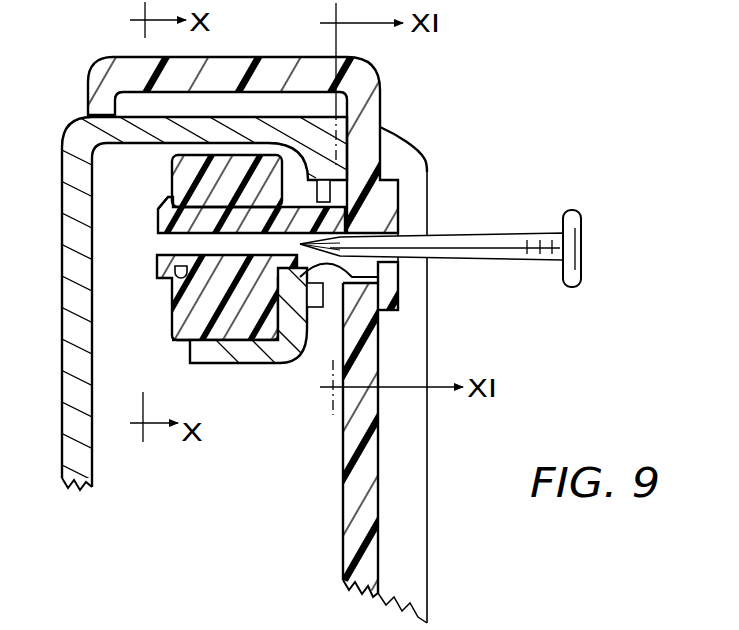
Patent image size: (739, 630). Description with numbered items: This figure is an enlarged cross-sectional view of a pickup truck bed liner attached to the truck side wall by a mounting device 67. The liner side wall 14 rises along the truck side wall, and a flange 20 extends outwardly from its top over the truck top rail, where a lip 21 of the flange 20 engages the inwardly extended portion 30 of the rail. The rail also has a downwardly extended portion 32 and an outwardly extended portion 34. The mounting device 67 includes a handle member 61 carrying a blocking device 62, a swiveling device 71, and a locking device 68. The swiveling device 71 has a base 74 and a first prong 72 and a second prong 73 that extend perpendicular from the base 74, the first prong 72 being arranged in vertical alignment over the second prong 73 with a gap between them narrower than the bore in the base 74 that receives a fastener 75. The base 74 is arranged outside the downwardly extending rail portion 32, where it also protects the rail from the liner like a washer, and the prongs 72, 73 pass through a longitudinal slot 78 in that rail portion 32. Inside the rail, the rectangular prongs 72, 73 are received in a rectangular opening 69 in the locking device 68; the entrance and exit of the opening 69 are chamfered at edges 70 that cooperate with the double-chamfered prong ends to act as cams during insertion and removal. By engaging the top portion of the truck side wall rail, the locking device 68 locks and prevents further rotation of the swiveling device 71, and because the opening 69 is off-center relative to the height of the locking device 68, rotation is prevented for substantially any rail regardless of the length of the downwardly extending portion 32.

The side wall 14 is at (365, 517).
The flange 20 is at (282, 65).
The lip 21 is at (98, 97).
The inwardly extended portion 30 is at (207, 120).
The downwardly extended portion 32 is at (295, 150).
The outwardly extended portion 34 is at (203, 362).
The handle member 61 is at (412, 190).
The blocking device 62 is at (402, 213).
The mounting device 67 is at (428, 150).
The locking device 68 is at (172, 345).
The rectangular opening 69 is at (158, 268).
The chamfered edges 70 is at (170, 200).
The swiveling device 71 is at (156, 248).
The first prong 72 is at (213, 230).
The second prong 73 is at (242, 342).
The base 74 is at (314, 308).
The fastener 75 is at (577, 222).
The longitudinal slot 78 is at (385, 268).